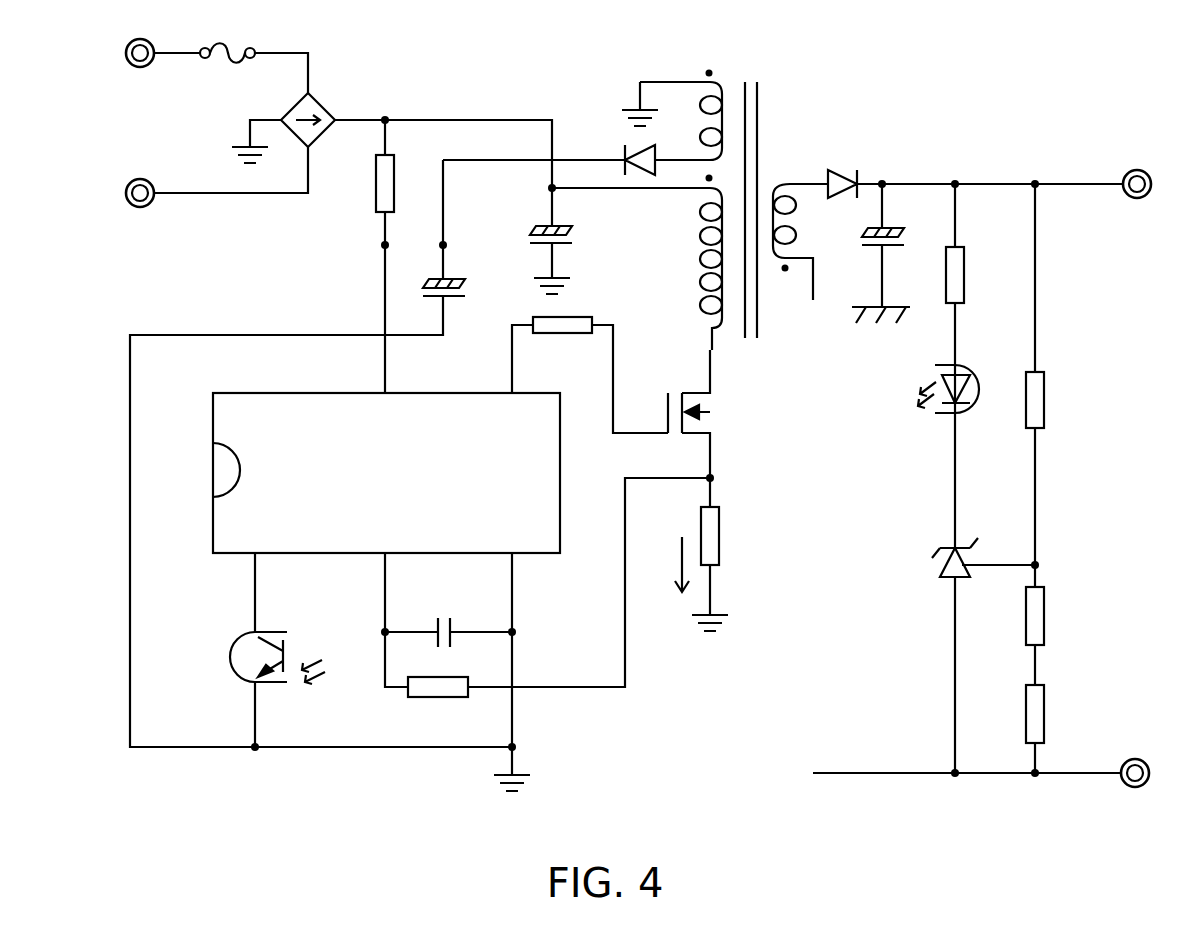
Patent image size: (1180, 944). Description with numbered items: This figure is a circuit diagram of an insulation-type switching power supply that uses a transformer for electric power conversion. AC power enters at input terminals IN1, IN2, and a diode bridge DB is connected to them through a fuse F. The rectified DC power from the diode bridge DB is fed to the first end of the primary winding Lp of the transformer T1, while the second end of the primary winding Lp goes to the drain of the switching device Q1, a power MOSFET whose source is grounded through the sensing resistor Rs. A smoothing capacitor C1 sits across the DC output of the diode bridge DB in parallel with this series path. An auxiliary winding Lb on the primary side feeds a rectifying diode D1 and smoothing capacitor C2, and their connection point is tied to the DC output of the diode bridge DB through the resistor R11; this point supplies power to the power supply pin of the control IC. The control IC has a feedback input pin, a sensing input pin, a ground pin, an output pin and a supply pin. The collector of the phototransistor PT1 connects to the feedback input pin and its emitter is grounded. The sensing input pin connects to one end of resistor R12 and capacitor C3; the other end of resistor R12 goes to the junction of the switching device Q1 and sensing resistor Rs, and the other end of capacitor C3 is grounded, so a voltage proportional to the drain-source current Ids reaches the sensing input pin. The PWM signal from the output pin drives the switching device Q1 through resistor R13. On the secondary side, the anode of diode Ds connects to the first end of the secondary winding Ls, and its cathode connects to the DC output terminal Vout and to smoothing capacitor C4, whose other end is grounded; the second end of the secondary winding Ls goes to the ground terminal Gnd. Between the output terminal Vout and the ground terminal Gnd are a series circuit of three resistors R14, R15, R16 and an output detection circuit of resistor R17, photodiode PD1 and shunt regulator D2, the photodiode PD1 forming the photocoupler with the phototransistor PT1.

The AC power supply input terminal IN1 is at (115, 53).
The AC power supply input terminal IN2 is at (115, 193).
The fuse F is at (227, 37).
The diode bridge DB is at (320, 113).
The resistor R11 is at (357, 183).
The smoothing capacitor C2 is at (452, 272).
The smoothing capacitor C1 is at (562, 221).
The rectifying diode D1 is at (622, 153).
The transformer T1 is at (755, 194).
The auxiliary winding Lb is at (681, 115).
The primary winding Lp is at (694, 263).
The secondary winding Ls is at (803, 242).
The diode Ds is at (851, 168).
The smoothing capacitor C4 is at (889, 243).
The DC output terminal Vout is at (1140, 168).
The resistor R17 is at (982, 275).
The photodiode PD1 is at (917, 389).
The resistor R14 is at (1064, 400).
The shunt regulator D2 is at (934, 558).
The resistor R15 is at (1064, 616).
The resistor R16 is at (1064, 714).
The ground terminal Gnd is at (1138, 758).
The control IC is at (368, 473).
The switching device Q1 is at (710, 413).
The sensing resistor Rs is at (728, 536).
The drain-source current Ids is at (669, 548).
The resistor R13 is at (562, 341).
The capacitor C3 is at (442, 618).
The resistor R12 is at (438, 704).
The phototransistor PT1 is at (277, 674).